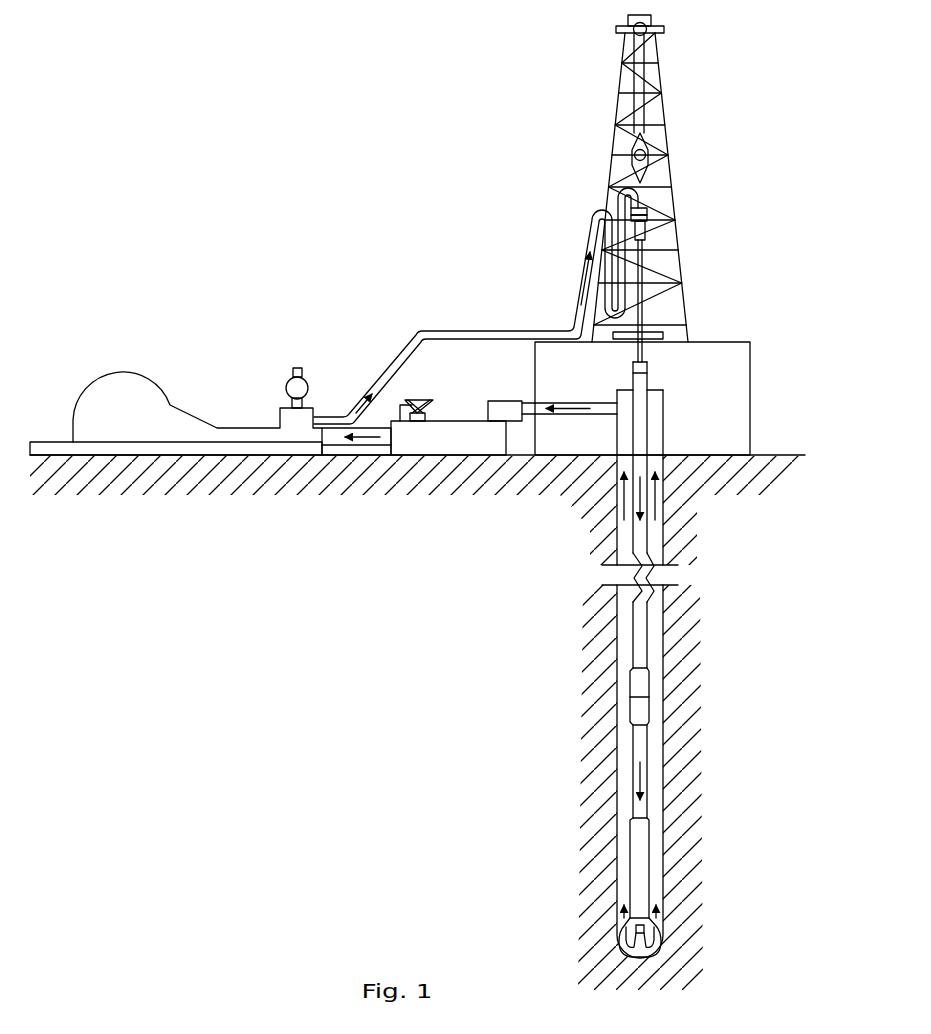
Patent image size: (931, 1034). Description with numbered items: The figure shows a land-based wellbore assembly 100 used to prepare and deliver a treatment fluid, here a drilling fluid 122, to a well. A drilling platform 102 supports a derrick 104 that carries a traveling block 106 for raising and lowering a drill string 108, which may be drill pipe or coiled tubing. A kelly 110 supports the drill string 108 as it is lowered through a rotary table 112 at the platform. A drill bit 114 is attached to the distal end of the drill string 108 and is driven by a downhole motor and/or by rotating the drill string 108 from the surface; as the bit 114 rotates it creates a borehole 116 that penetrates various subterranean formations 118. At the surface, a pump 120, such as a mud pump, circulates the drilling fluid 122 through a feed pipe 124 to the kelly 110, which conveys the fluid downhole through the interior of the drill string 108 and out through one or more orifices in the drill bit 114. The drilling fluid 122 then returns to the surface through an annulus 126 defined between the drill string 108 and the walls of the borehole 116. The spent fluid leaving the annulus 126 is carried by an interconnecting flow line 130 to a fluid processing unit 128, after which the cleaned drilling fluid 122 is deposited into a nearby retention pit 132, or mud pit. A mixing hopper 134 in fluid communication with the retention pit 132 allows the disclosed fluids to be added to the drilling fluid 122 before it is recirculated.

The wellbore assembly 100 is at (390, 90).
The drilling platform 102 is at (752, 343).
The derrick 104 is at (666, 104).
The traveling block 106 is at (652, 154).
The drill string 108 is at (645, 548).
The kelly 110 is at (643, 258).
The rotary table 112 is at (665, 338).
The drill bit 114 is at (660, 933).
The borehole 116 is at (666, 632).
The subterranean formations 118 is at (485, 666).
The pump 120 is at (105, 423).
The drilling fluid 122 is at (336, 418).
The feed pipe 124 is at (433, 331).
The annulus 126 is at (653, 775).
The fluid processing unit 128 is at (504, 401).
The flow line 130 is at (603, 414).
The retention pit 132 is at (486, 447).
The mixing hopper 134 is at (403, 424).